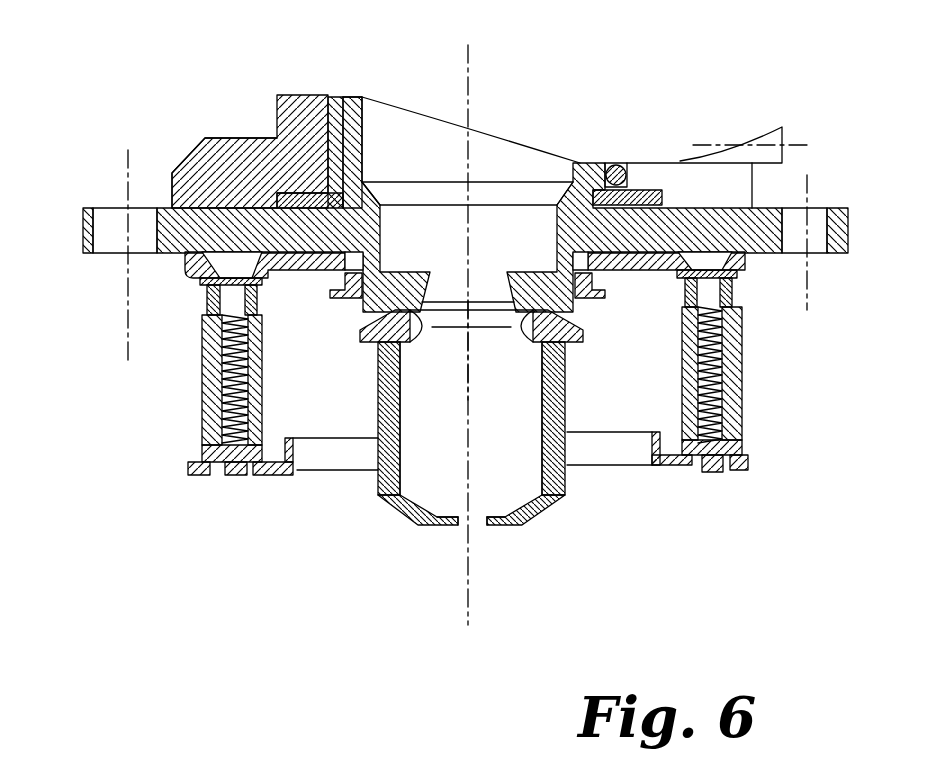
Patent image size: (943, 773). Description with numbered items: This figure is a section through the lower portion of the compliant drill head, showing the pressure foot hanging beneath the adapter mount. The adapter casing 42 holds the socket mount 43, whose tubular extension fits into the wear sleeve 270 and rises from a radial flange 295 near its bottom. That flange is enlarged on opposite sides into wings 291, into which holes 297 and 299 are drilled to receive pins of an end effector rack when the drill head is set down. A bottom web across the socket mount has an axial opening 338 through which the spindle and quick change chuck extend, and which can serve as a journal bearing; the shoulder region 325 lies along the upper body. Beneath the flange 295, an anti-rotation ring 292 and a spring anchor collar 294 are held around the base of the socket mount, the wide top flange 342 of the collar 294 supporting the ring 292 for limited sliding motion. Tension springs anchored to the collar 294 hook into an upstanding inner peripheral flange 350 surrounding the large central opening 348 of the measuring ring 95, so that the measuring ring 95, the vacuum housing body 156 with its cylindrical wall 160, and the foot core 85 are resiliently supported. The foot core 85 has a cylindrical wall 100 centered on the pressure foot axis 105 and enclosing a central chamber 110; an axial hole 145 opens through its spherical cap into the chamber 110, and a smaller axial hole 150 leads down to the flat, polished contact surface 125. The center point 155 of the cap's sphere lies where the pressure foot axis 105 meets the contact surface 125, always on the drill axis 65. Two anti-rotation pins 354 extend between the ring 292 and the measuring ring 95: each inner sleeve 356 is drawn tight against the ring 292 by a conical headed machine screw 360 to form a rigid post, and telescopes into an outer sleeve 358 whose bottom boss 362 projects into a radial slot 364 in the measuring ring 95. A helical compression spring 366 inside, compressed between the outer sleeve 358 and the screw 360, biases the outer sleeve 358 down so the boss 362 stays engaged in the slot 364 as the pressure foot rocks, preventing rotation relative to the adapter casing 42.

The adapter casing 42 is at (266, 88).
The wear sleeve 270 is at (340, 92).
The socket mount 43 is at (364, 96).
The housing shoulder 325 is at (172, 183).
The hole 299 is at (102, 223).
The wings 291 is at (95, 228).
The radial flange 295 is at (168, 258).
The spring anchor collar 294 is at (304, 287).
The axial opening 338 is at (520, 242).
The top flange 342 is at (637, 283).
The machine screw 360 is at (713, 247).
The hole 297 is at (823, 235).
The anti-rotation ring 292 is at (747, 262).
The inner sleeve 356 is at (740, 295).
The anti-rotation pins 354 is at (750, 370).
The outer sleeve 358 is at (742, 425).
The helical compression spring 366 is at (718, 423).
The radial slot 364 is at (750, 462).
The boss 362 is at (712, 472).
The inner peripheral flange 350 is at (650, 433).
The measuring ring 95 is at (265, 476).
The central opening 348 is at (298, 466).
The body 156 is at (372, 402).
The cylindrical wall 160 is at (567, 393).
The axial hole 145 is at (408, 325).
The cylindrical wall 100 is at (542, 422).
The central chamber 110 is at (455, 444).
The foot core 85 is at (405, 522).
The contact surface 125 is at (507, 527).
The axial hole 150 is at (467, 527).
The center point 155 is at (468, 510).
The drill axis 65 is at (478, 593).
The pressure foot axis 105 is at (539, 460).